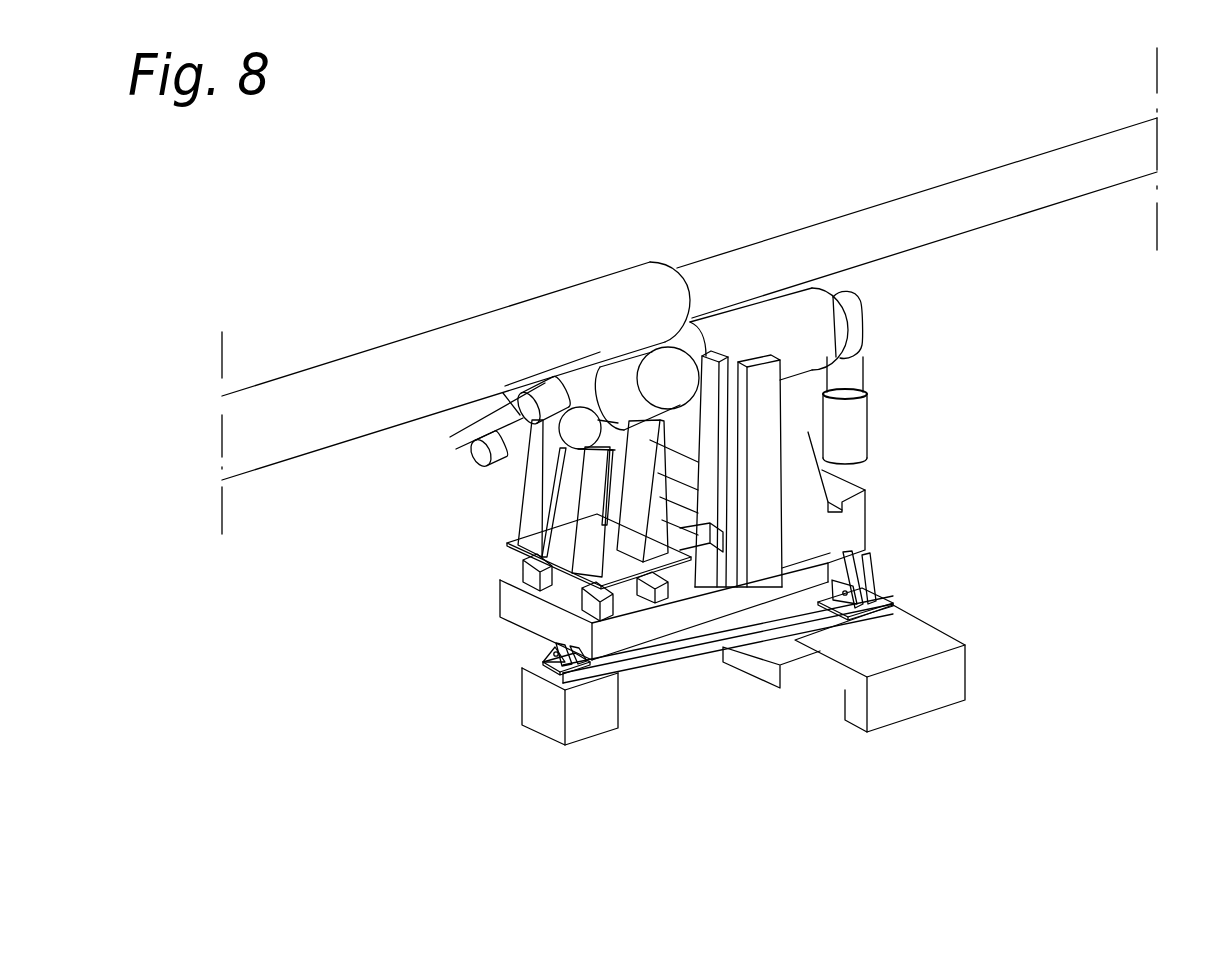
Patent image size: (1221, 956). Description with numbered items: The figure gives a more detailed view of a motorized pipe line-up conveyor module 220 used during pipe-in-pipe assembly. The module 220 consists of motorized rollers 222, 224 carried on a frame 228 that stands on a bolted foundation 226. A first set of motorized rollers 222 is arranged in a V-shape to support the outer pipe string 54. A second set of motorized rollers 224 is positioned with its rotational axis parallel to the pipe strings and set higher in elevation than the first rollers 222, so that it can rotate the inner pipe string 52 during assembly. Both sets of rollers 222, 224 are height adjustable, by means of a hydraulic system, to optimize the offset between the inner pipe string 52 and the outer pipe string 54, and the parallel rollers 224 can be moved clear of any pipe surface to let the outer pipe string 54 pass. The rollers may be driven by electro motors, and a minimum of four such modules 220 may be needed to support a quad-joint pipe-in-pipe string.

The inner pipe string 52 is at (962, 197).
The outer pipe string 54 is at (446, 349).
The motorized pipe line-up conveyor module 220 is at (1068, 456).
The motorized rollers 222 is at (588, 383).
The motorized rollers 224 is at (778, 343).
The bolted foundation 226 is at (550, 672).
The frame 228 is at (770, 533).